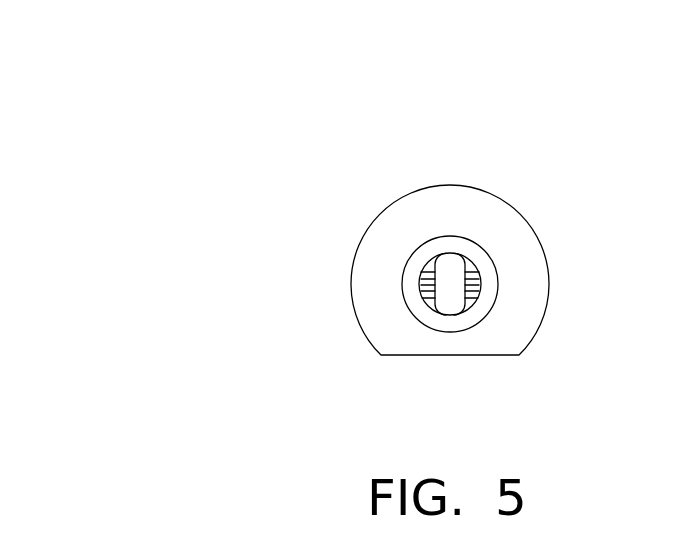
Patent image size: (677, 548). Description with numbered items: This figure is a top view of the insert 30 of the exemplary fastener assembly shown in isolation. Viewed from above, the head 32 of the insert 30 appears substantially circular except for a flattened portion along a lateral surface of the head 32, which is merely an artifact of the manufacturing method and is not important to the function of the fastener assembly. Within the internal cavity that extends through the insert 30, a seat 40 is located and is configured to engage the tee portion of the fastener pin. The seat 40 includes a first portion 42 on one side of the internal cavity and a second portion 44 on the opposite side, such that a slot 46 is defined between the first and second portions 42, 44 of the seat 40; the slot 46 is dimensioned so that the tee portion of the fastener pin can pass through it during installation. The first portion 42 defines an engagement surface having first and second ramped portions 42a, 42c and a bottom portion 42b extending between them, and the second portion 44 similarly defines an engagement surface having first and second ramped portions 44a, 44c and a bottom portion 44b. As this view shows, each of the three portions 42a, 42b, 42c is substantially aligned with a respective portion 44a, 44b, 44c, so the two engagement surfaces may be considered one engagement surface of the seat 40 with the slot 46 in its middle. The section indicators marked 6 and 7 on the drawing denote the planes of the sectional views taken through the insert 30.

The insert 30 is at (248, 108).
The head 32 is at (527, 345).
The seat 40 is at (490, 240).
The first portion 42 is at (446, 253).
The first ramped portion 42a is at (421, 277).
The bottom portion 42b is at (421, 285).
The second ramped portion 42c is at (423, 296).
The second portion 44 is at (455, 253).
The first ramped portion 44a is at (480, 272).
The bottom portion 44b is at (480, 285).
The second ramped portion 44c is at (480, 292).
The slot 46 is at (454, 315).
The section line 6- 6 is at (350, 284).
The section line 7- 7 is at (456, 155).